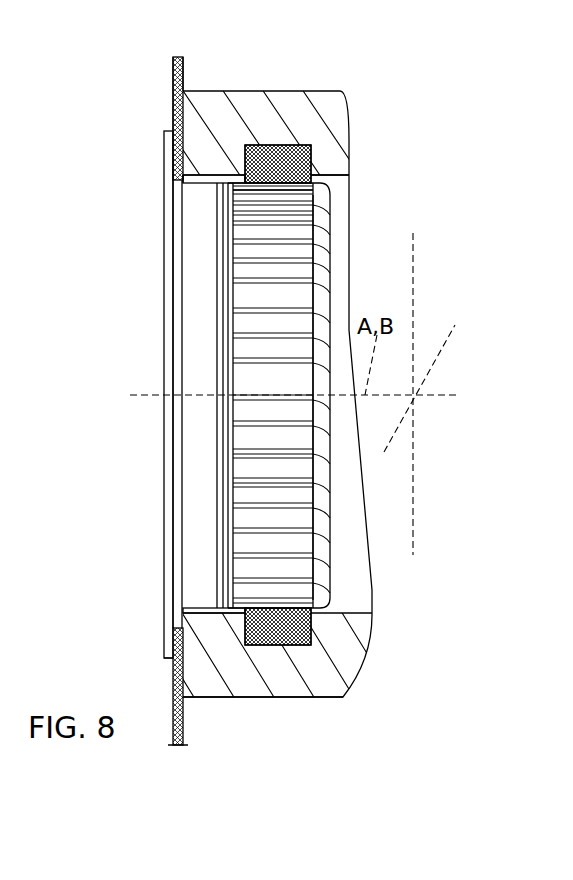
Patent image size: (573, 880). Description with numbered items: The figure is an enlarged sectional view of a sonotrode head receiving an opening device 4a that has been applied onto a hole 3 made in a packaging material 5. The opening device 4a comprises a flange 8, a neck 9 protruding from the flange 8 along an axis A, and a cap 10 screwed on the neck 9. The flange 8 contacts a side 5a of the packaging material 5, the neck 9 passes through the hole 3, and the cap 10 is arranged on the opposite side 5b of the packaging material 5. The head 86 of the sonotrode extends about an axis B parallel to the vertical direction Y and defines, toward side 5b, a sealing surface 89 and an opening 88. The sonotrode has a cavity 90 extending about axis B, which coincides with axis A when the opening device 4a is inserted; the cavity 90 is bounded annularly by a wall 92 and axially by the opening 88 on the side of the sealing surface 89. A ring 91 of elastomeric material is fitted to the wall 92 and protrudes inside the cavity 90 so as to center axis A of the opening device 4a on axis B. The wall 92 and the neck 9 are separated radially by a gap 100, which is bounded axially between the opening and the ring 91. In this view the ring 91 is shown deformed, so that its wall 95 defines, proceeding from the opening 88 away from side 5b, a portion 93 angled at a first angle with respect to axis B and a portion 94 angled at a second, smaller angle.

The hole 3 is at (182, 187).
The opening device 4a is at (355, 291).
The packaging material 5 is at (184, 718).
The side of packaging material 5a is at (170, 70).
The side of packaging material 5b is at (186, 70).
The flange 8 is at (170, 147).
The neck 9 is at (195, 343).
The cap 10 is at (332, 560).
The head 86 is at (305, 649).
The opening 88 is at (186, 604).
The sealing surface 89 is at (171, 675).
The cavity 90 is at (340, 184).
The ring 91 is at (283, 160).
The wall 92 is at (208, 185).
The portion 93 is at (248, 193).
The portion 94 is at (299, 195).
The wall 95 is at (278, 195).
The gap 100 is at (206, 620).